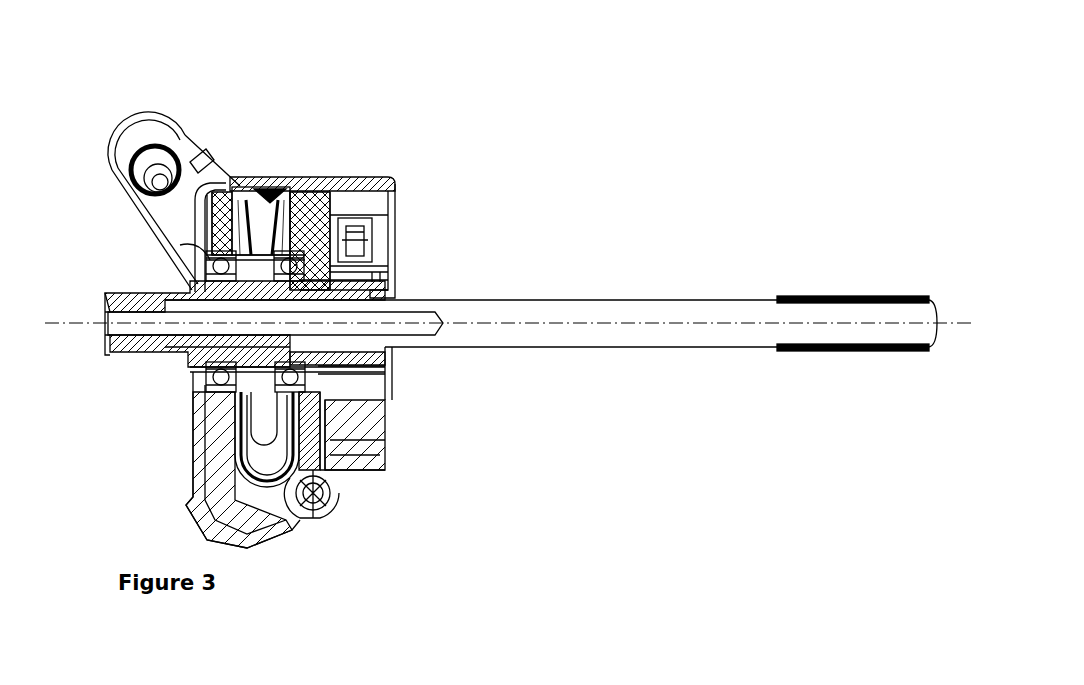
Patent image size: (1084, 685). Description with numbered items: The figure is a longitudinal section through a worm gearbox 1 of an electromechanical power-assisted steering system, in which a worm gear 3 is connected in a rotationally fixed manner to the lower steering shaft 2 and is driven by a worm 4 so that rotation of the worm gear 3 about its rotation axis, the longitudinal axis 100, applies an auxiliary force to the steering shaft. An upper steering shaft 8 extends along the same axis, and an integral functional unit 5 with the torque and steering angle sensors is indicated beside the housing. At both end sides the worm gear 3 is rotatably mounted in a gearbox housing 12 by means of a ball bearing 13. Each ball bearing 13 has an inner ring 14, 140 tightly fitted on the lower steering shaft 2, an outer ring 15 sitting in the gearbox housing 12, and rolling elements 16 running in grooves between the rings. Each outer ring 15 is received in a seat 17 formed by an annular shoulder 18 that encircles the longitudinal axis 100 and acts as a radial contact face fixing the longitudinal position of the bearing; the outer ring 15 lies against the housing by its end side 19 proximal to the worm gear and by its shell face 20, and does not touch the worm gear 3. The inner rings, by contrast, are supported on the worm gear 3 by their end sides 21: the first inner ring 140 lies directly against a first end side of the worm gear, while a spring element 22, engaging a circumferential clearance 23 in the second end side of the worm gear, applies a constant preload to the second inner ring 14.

The worm gearbox 1 is at (266, 124).
The lower steering shaft 2 is at (170, 295).
The worm gear 3 is at (245, 220).
The worm 4 is at (332, 497).
The integral functional unit 5 is at (421, 246).
The upper steering shaft 8 is at (596, 312).
The gearbox housing 12 is at (300, 240).
The ball bearing 13 is at (212, 380).
The second inner ring 14 is at (215, 370).
The outer ring 15 is at (205, 390).
The rolling elements 16 is at (205, 165).
The seat 17 is at (335, 195).
The annular shoulder 18 is at (210, 260).
The end side 19 is at (362, 232).
The shell face 20 is at (322, 215).
The end side 21 is at (262, 262).
The spring element 22 is at (208, 165).
The clearance 23 is at (250, 255).
The longitudinal axis 100 is at (74, 320).
The first inner ring 140 is at (345, 370).